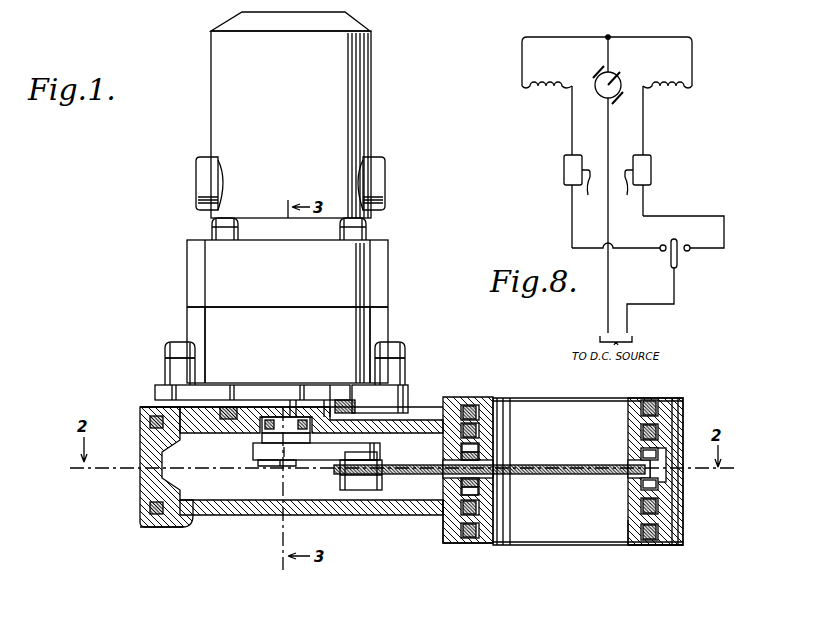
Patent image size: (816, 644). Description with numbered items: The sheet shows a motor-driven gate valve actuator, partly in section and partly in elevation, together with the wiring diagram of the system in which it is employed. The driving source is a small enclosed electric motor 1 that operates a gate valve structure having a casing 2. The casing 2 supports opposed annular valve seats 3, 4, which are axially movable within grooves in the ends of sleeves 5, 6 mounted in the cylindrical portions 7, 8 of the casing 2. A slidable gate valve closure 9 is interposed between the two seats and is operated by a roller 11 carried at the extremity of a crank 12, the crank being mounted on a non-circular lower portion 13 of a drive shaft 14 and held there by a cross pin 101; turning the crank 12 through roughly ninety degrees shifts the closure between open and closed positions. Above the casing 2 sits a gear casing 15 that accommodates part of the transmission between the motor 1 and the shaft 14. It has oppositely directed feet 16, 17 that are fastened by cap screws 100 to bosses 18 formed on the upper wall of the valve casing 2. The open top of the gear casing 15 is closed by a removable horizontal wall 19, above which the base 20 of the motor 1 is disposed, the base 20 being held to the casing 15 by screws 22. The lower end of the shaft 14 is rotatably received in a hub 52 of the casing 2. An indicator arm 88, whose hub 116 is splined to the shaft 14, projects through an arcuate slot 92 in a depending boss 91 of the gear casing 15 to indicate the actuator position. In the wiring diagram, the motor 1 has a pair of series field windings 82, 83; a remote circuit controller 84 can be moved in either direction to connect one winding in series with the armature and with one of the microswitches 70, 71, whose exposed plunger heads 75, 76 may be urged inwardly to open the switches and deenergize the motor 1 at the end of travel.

In FIG. 1, the electric motor 1 is at (355, 72).
In FIG. 8, the electric motor 1 is at (620, 72).
In FIG. 1, the casing 2 is at (402, 514).
In FIG. 1, the annular valve seat 3 is at (486, 455).
In FIG. 1, the annular valve seat 4 is at (480, 481).
In FIG. 1, the sleeve 5 is at (490, 418).
In FIG. 1, the sleeve 6 is at (486, 518).
In FIG. 1, the cylindrical portion 7 is at (662, 422).
In FIG. 1, the cylindrical portion 8 is at (663, 535).
In FIG. 1, the gate valve closure 9 is at (594, 486).
In FIG. 1, the roller 11 is at (364, 492).
In FIG. 1, the crank 12 is at (312, 461).
In FIG. 1, the non-circular lower portion 13 is at (268, 466).
In FIG. 1, the drive shaft 14 is at (265, 445).
In FIG. 1, the gear casing 15 is at (356, 335).
In FIG. 1, the foot 16 is at (405, 377).
In FIG. 1, the foot 17 is at (165, 369).
In FIG. 1, the boss 18 is at (412, 404).
In FIG. 1, the horizontal wall 19 is at (309, 307).
In FIG. 1, the motor base 20 is at (287, 311).
In FIG. 1, the screws 22 is at (390, 233).
In FIG. 1, the hub 52 is at (253, 437).
In FIG. 8, the microswitch 70 is at (650, 165).
In FIG. 8, the microswitch 71 is at (566, 165).
In FIG. 8, the plunger head 75 is at (624, 192).
In FIG. 8, the plunger head 76 is at (588, 192).
In FIG. 8, the series field winding 82 is at (666, 80).
In FIG. 8, the series field winding 83 is at (548, 80).
In FIG. 8, the remote circuit controller 84 is at (678, 260).
In FIG. 1, the indicator arm 88 is at (160, 393).
In FIG. 1, the depending boss 91 is at (356, 411).
In FIG. 1, the arcuate slot 92 is at (326, 395).
In FIG. 1, the cap screws 100 is at (418, 356).
In FIG. 1, the cross pin 101 is at (292, 461).
In FIG. 1, the hub 116 is at (297, 394).